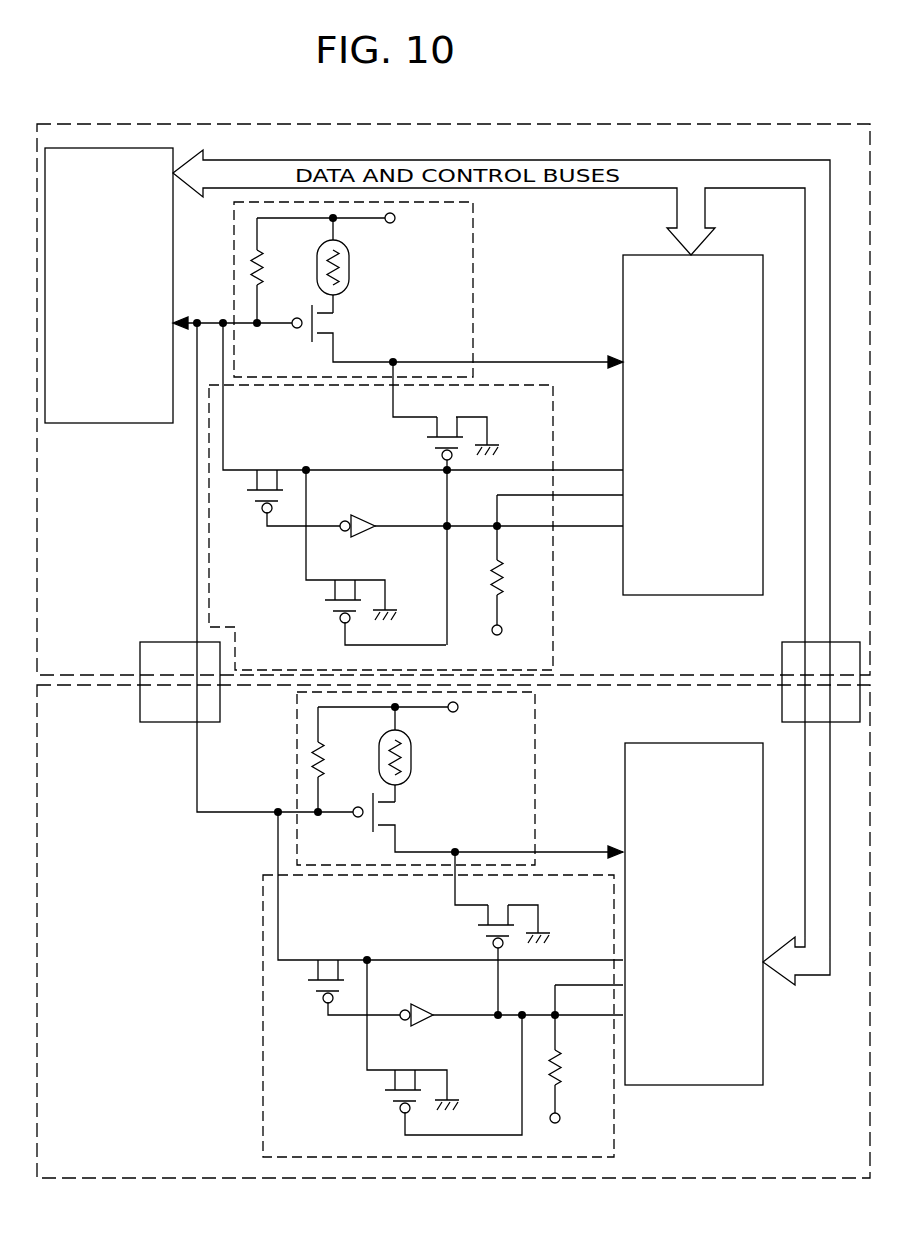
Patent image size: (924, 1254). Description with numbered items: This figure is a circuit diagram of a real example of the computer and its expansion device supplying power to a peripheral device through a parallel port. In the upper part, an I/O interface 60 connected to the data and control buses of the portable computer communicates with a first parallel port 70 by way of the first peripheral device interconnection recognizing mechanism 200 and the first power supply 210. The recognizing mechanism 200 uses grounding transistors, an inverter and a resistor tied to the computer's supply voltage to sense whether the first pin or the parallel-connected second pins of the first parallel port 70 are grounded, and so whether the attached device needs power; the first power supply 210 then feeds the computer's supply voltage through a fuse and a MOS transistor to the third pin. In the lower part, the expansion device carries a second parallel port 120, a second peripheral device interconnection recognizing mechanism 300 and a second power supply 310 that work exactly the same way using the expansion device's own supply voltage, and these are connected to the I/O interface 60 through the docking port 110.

The I/O interface 60 is at (95, 423).
The first parallel port 70 is at (705, 595).
The docking port 110 is at (167, 722).
The second parallel port 120 is at (695, 1085).
The first peripheral device interconnection recognizing mechanism 200 is at (556, 595).
The first power supply 210 is at (473, 283).
The second peripheral device interconnection recognizing mechanism 300 is at (263, 1040).
The second power supply 310 is at (297, 768).